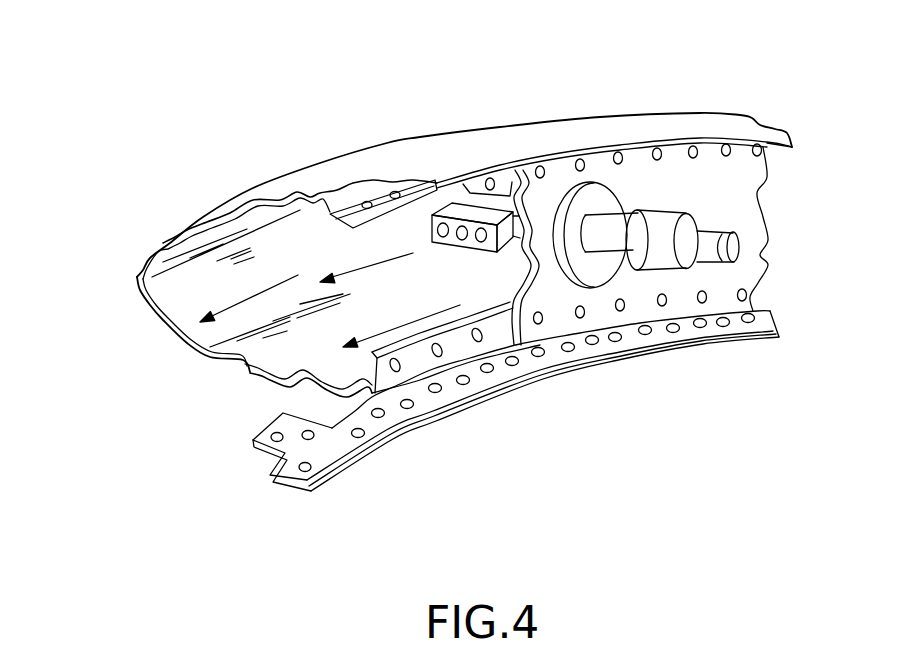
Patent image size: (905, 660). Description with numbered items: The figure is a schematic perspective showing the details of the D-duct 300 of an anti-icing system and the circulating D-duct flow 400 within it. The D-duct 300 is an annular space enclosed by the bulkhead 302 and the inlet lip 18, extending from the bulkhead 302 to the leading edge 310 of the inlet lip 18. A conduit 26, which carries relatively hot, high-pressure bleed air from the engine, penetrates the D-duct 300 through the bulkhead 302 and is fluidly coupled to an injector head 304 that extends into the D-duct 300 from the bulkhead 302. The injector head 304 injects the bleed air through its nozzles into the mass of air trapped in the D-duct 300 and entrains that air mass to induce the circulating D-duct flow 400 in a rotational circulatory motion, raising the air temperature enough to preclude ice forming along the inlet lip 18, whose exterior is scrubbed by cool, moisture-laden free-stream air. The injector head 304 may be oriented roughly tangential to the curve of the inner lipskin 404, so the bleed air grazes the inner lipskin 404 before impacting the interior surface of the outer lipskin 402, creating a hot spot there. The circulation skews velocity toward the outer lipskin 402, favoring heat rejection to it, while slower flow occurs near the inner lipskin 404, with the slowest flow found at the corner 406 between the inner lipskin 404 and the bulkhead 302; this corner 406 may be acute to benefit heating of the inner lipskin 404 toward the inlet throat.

The D-duct 300 is at (668, 75).
The inlet lip 18 is at (347, 183).
The injector head 304 is at (472, 210).
The conduit 26 is at (663, 223).
The leading edge 310 is at (137, 277).
The outer lipskin 402 is at (318, 197).
The circulating D-duct flow 400 is at (358, 266).
The corner 406 is at (363, 386).
The inner lipskin 404 is at (252, 378).
The bulkhead 302 is at (678, 285).